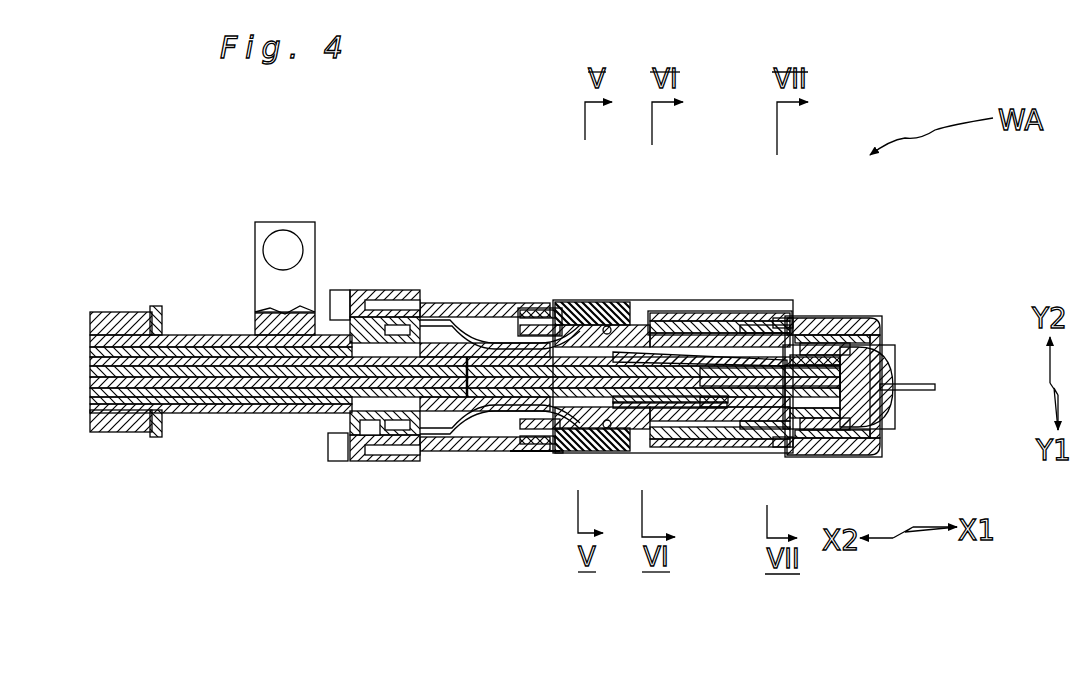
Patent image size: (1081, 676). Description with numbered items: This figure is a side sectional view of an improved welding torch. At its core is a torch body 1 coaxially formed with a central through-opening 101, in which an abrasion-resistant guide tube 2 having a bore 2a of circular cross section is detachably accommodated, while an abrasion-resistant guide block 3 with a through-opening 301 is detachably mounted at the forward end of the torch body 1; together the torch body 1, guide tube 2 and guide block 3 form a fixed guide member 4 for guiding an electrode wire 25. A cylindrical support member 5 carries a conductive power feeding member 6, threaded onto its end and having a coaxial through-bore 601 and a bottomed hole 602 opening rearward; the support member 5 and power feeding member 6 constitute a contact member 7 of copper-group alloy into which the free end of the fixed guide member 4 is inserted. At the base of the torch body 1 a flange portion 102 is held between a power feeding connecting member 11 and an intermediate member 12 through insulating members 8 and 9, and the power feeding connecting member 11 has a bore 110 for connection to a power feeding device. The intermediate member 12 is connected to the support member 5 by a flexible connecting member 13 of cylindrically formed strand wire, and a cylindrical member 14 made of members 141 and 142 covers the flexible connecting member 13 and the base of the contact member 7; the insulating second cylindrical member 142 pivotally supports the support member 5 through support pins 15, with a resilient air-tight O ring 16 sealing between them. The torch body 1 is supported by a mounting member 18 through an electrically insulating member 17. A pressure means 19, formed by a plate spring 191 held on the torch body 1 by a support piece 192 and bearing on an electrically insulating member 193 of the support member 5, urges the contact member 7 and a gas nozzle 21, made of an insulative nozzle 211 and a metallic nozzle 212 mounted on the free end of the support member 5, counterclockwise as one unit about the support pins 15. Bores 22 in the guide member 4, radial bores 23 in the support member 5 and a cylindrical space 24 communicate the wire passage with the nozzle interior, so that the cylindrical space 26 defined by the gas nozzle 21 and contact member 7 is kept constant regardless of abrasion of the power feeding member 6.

The torch body 1 is at (563, 452).
The guide tube 2 is at (598, 452).
The bore 2a is at (535, 451).
The guide block 3 is at (745, 452).
The fixed guide member 4 is at (686, 615).
The support member 5 is at (853, 455).
The power feeding member 6 is at (865, 410).
The contact member 7 is at (948, 440).
The insulating member 8 is at (325, 400).
The insulating member 9 is at (393, 453).
The power feeding connecting member 11 is at (330, 290).
The intermediate member 12 is at (428, 303).
The flexible connecting member 13 is at (487, 440).
The cylindrical member 14 is at (603, 150).
The support pins 15 is at (580, 302).
The resilient air-tight member 16 is at (611, 326).
The electrically insulating member 17 is at (168, 312).
The mounting member 18 is at (122, 312).
The pressure means 19 is at (757, 180).
The gas nozzle 21 is at (903, 180).
The bores 22 is at (483, 343).
The bores 23 is at (705, 420).
The cylindrical space 24 is at (638, 440).
The electrode wire 25 is at (927, 390).
The cylindrical space 26 is at (870, 322).
The through-opening 101 is at (213, 380).
The flange portion 102 is at (363, 445).
The bore 110 is at (285, 236).
The member 141 is at (545, 310).
The second cylindrical member 142 is at (548, 325).
The plate spring 191 is at (678, 321).
The support piece 192 is at (655, 313).
The electrically insulating member 193 is at (724, 352).
The nozzle 211 is at (810, 318).
The nozzle 212 is at (822, 335).
The through-opening 301 is at (777, 447).
The through-bore 601 is at (900, 382).
The hole 602 is at (878, 345).